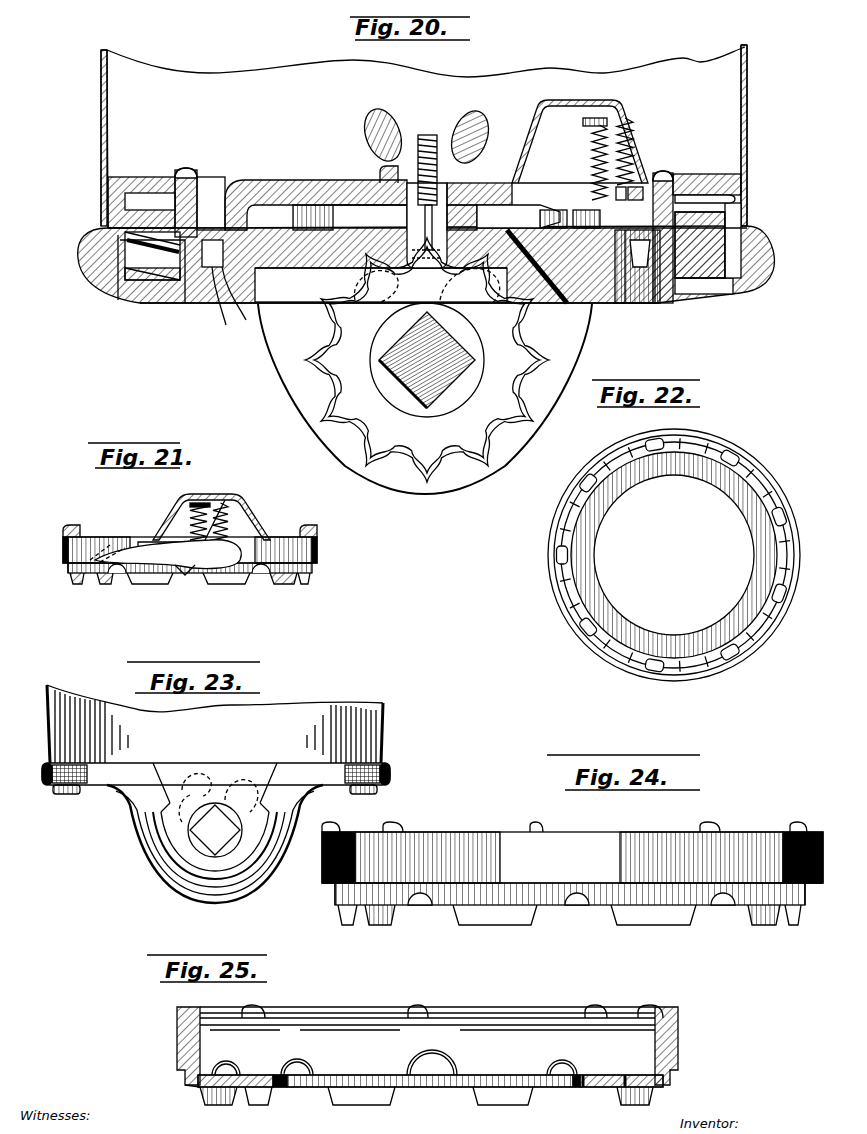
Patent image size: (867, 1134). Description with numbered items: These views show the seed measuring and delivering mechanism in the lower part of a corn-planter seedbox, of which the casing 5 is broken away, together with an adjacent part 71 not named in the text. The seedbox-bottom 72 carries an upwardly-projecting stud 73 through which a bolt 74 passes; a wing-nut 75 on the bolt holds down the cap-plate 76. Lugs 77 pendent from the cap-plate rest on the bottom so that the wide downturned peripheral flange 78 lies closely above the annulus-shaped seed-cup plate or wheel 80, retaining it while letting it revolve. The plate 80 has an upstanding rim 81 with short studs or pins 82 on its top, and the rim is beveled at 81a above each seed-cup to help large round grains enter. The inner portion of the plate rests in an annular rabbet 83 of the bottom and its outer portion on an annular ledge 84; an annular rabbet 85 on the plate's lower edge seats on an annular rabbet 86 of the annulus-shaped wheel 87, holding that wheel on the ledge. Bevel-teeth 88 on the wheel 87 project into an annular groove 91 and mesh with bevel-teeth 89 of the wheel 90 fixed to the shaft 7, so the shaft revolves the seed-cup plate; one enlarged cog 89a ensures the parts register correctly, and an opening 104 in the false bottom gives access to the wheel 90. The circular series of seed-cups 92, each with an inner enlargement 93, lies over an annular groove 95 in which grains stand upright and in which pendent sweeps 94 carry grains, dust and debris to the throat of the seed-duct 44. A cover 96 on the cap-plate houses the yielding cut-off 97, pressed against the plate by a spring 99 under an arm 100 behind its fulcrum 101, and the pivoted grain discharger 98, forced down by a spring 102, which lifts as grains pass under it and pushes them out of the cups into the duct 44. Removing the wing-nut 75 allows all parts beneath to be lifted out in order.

In FIG. 20, the frame 5 is at (426, 76).
In FIG. 23, the frame 5 is at (215, 724).
In FIG. 20, the shaft 7 is at (405, 377).
In FIG. 23, the shaft 7 is at (215, 830).
In FIG. 20, the seed-duct 44 is at (640, 300).
In FIG. 20, the pawl 71 is at (553, 219).
In FIG. 20, the seedbox-bottom 72 is at (265, 318).
In FIG. 23, the seedbox-bottom 72 is at (216, 783).
In FIG. 20, the stud 73 is at (518, 216).
In FIG. 20, the bolt 74 is at (427, 135).
In FIG. 20, the wing-nut 75 is at (400, 96).
In FIG. 20, the cap-plate 76 is at (310, 180).
In FIG. 20, the lugs 77 is at (350, 217).
In FIG. 20, the peripheral flange 78 is at (422, 219).
In FIG. 20, the seed-cup plate or wheel 80 is at (427, 234).
In FIG. 21, the seed-cup plate or wheel 80 is at (203, 572).
In FIG. 22, the seed-cup plate or wheel 80 is at (584, 546).
In FIG. 24, the seed-cup plate or wheel 80 is at (570, 894).
In FIG. 25, the seed-cup plate or wheel 80 is at (378, 1080).
In FIG. 20, the rim 81 is at (178, 176).
In FIG. 21, the rim 81 is at (317, 548).
In FIG. 22, the rim 81 is at (560, 548).
In FIG. 24, the rim 81 is at (495, 840).
In FIG. 25, the rim 81 is at (178, 1045).
In FIG. 20, the beveled portion 81a is at (700, 245).
In FIG. 21, the beveled portion 81a is at (115, 575).
In FIG. 22, the beveled portion 81a is at (780, 512).
In FIG. 24, the beveled portion 81a is at (577, 905).
In FIG. 25, the beveled portion 81a is at (695, 1095).
In FIG. 20, the studs or pins 82 is at (286, 193).
In FIG. 21, the studs or pins 82 is at (190, 521).
In FIG. 24, the studs or pins 82 is at (708, 828).
In FIG. 25, the studs or pins 82 is at (222, 1003).
In FIG. 20, the annular rabbet 83 is at (410, 262).
In FIG. 20, the annular ledge 84 is at (210, 267).
In FIG. 20, the annular rabbet 85 is at (152, 256).
In FIG. 21, the annular rabbet 85 is at (66, 568).
In FIG. 22, the annular rabbet 85 is at (552, 576).
In FIG. 24, the annular rabbet 85 is at (330, 885).
In FIG. 25, the annular rabbet 85 is at (183, 1072).
In FIG. 20, the annular rabbet 86 is at (153, 243).
In FIG. 20, the annulus-shaped wheel 87 is at (108, 212).
In FIG. 20, the bevel-teeth 88 is at (148, 290).
In FIG. 20, the bevel-teeth 89 is at (322, 372).
In FIG. 23, the bevel-teeth 89 is at (185, 882).
In FIG. 20, the enlarged cog 89a is at (426, 286).
In FIG. 23, the enlarged cog 89a is at (228, 778).
In FIG. 20, the wheel 90 is at (400, 413).
In FIG. 20, the annular groove 91 is at (165, 290).
In FIG. 20, the seed-cups 92 is at (638, 250).
In FIG. 22, the seed-cups 92 is at (578, 482).
In FIG. 25, the seed-cups 92 is at (642, 1076).
In FIG. 20, the enlargement 93 is at (552, 266).
In FIG. 22, the enlargement 93 is at (770, 517).
In FIG. 25, the enlargement 93 is at (612, 1076).
In FIG. 20, the sweep 94 is at (441, 281).
In FIG. 21, the sweep 94 is at (140, 578).
In FIG. 22, the sweep 94 is at (785, 561).
In FIG. 24, the sweep 94 is at (381, 918).
In FIG. 25, the sweep 94 is at (218, 1100).
In FIG. 20, the annular groove 95 is at (600, 300).
In FIG. 20, the cap or cover 96 is at (574, 102).
In FIG. 21, the cap or cover 96 is at (246, 503).
In FIG. 21, the cut-off 97 is at (105, 543).
In FIG. 20, the grain discharger 98 is at (678, 192).
In FIG. 21, the grain discharger 98 is at (186, 577).
In FIG. 20, the spring 99 is at (592, 161).
In FIG. 21, the spring 99 is at (219, 521).
In FIG. 20, the arm 100 is at (582, 120).
In FIG. 21, the arm 100 is at (188, 505).
In FIG. 21, the fulcrum 101 is at (145, 540).
In FIG. 20, the spring 102 is at (634, 133).
In FIG. 21, the spring 102 is at (206, 497).
In FIG. 20, the opening 104 is at (211, 203).